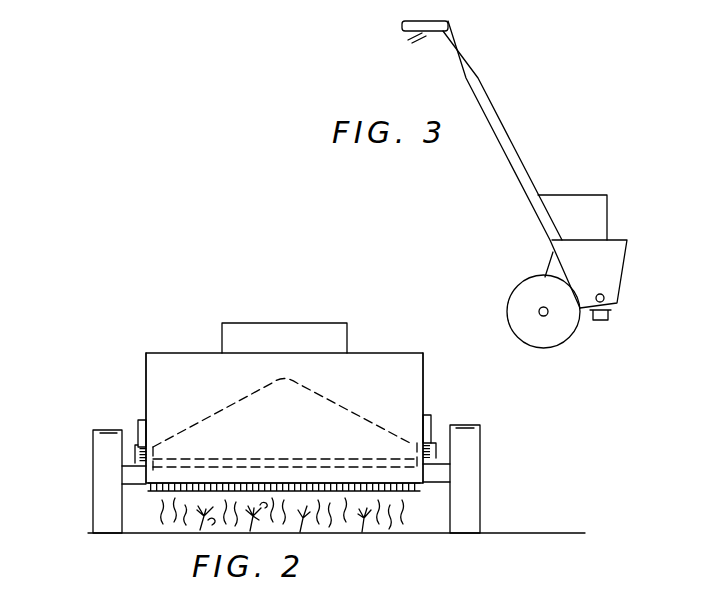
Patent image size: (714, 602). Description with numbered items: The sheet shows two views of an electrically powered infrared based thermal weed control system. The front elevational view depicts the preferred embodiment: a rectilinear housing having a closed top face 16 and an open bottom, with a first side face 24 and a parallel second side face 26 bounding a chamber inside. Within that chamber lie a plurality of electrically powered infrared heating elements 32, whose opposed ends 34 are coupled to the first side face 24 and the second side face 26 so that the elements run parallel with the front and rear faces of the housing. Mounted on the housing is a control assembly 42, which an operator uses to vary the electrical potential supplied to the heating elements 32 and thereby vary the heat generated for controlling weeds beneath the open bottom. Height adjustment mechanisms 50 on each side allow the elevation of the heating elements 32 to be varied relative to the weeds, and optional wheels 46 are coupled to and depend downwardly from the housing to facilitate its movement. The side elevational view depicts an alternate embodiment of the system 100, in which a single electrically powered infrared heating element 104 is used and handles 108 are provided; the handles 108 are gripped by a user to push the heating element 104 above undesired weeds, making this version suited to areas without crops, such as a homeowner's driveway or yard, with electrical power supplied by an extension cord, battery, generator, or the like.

In FIG. 3, the system 100 is at (557, 133).
In FIG. 3, the electrically powered infrared heating element 104 is at (603, 303).
In FIG. 3, the handles 108 is at (421, 21).
In FIG. 2, the closed top face 16 is at (380, 352).
In FIG. 2, the first side face 24 is at (426, 380).
In FIG. 2, the second side face 26 is at (146, 382).
In FIG. 2, the electrically powered infrared heating elements 32 is at (227, 458).
In FIG. 2, the opposed ends 34 is at (153, 460).
In FIG. 2, the control assembly 42 is at (297, 350).
In FIG. 2, the wheels 46 is at (102, 472).
In FIG. 2, the height adjustment mechanisms 50 is at (137, 422).